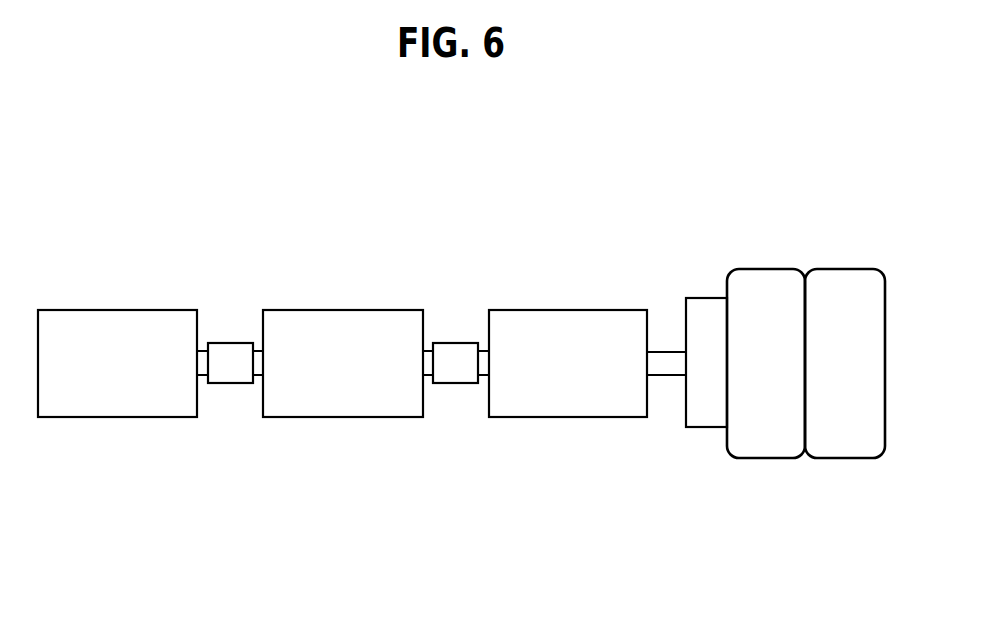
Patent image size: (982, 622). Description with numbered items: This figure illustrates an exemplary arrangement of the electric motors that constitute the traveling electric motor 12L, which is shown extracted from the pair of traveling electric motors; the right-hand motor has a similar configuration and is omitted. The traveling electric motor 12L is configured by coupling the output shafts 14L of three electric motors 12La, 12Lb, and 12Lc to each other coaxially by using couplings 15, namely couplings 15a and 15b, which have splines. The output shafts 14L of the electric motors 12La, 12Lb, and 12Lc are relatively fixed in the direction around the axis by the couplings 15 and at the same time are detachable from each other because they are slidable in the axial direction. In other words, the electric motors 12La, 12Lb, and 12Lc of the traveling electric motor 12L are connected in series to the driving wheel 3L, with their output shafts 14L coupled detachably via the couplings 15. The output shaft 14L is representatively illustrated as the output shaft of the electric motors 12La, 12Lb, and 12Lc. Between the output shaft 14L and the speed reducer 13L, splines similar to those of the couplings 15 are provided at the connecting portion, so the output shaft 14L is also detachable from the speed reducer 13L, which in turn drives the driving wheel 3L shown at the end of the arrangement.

The traveling electric motor 12L is at (627, 205).
The electric motor 12La is at (134, 321).
The electric motor 12Lb is at (342, 321).
The electric motor 12Lc is at (566, 321).
The couplings 15 is at (508, 525).
The coupling 15a is at (233, 378).
The coupling 15b is at (454, 378).
The speed reducer 13L is at (710, 305).
The output shaft 14L is at (669, 370).
The driving wheel 3L is at (885, 250).